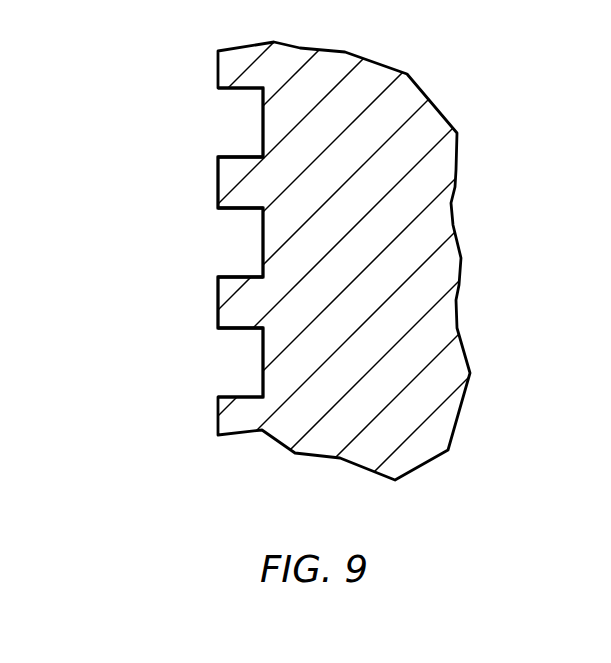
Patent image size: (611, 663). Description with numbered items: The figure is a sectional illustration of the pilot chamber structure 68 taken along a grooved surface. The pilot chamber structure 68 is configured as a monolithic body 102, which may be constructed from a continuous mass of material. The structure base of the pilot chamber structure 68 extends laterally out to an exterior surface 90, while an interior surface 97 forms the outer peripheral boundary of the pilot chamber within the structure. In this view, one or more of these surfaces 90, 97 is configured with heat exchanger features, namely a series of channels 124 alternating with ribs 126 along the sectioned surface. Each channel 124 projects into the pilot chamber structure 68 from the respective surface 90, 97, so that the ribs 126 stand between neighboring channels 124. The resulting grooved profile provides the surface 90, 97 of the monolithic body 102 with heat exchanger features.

The pilot chamber structure 68 is at (305, 265).
The monolithic body 102 is at (463, 184).
The exterior surface 90 is at (305, 265).
The interior surface 97 is at (305, 265).
The channel 124 is at (243, 123).
The rib 126 is at (243, 185).